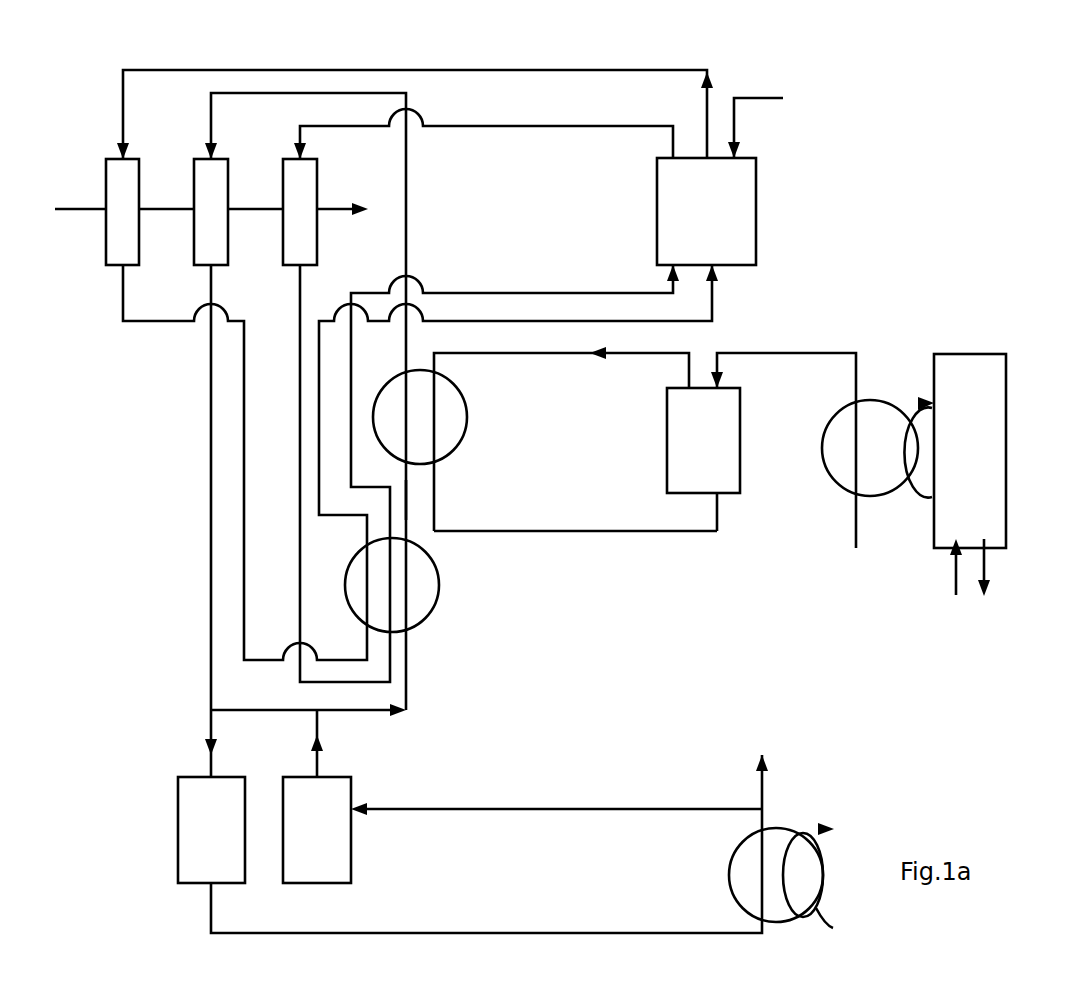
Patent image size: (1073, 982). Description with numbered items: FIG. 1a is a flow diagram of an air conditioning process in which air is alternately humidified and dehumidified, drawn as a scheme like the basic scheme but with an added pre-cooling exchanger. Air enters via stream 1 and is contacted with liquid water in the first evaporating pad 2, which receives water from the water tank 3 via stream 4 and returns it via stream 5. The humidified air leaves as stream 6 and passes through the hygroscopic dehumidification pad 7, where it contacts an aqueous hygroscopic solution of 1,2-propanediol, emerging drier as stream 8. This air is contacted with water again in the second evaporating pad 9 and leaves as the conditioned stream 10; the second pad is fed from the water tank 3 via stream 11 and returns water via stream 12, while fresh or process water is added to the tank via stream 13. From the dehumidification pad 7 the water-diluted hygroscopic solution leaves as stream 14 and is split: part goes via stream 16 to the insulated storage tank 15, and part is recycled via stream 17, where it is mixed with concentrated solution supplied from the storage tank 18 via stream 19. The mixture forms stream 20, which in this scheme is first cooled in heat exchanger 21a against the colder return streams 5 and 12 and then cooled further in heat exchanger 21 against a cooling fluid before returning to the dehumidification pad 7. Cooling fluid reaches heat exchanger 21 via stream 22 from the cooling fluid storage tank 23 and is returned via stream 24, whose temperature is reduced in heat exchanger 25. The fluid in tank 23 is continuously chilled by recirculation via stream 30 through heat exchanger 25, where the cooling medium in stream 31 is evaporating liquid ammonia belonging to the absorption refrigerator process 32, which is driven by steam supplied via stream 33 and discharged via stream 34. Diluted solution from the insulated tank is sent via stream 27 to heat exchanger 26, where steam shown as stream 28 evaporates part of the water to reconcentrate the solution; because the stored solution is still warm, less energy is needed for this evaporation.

The stream 1 is at (72, 209).
The first evaporating pad 2 is at (106, 238).
The water tank 3 is at (757, 193).
The stream 4 is at (122, 78).
The stream 5 is at (244, 351).
The stream 6 is at (164, 209).
The hygroscopic dehumidification pad 7 is at (194, 238).
The stream 8 is at (255, 209).
The second evaporating pad 9 is at (283, 238).
The stream 10 is at (326, 207).
The stream 11 is at (521, 127).
The stream 12 is at (531, 293).
The stream 13 is at (773, 98).
The stream 14 is at (211, 452).
The insulated storage tank 15 is at (178, 823).
The stream 16 is at (210, 740).
The stream 17 is at (212, 709).
The storage tank 18 is at (351, 782).
The stream 19 is at (322, 735).
The stream 20 is at (407, 497).
The heat exchanger 21 is at (457, 432).
The heat exchanger 21a is at (417, 603).
The stream 22 is at (540, 354).
The cooling fluid storage tank 23 is at (667, 452).
The stream 24 is at (535, 532).
The heat exchanger 25 is at (822, 463).
The heat exchanger 26 is at (729, 870).
The stream 27 is at (468, 932).
The stream 28 is at (806, 838).
The stream 30 is at (717, 498).
The stream 31 is at (920, 406).
The absorption refrigerator process 32 is at (1007, 415).
The stream 33 is at (955, 565).
The stream 34 is at (985, 565).